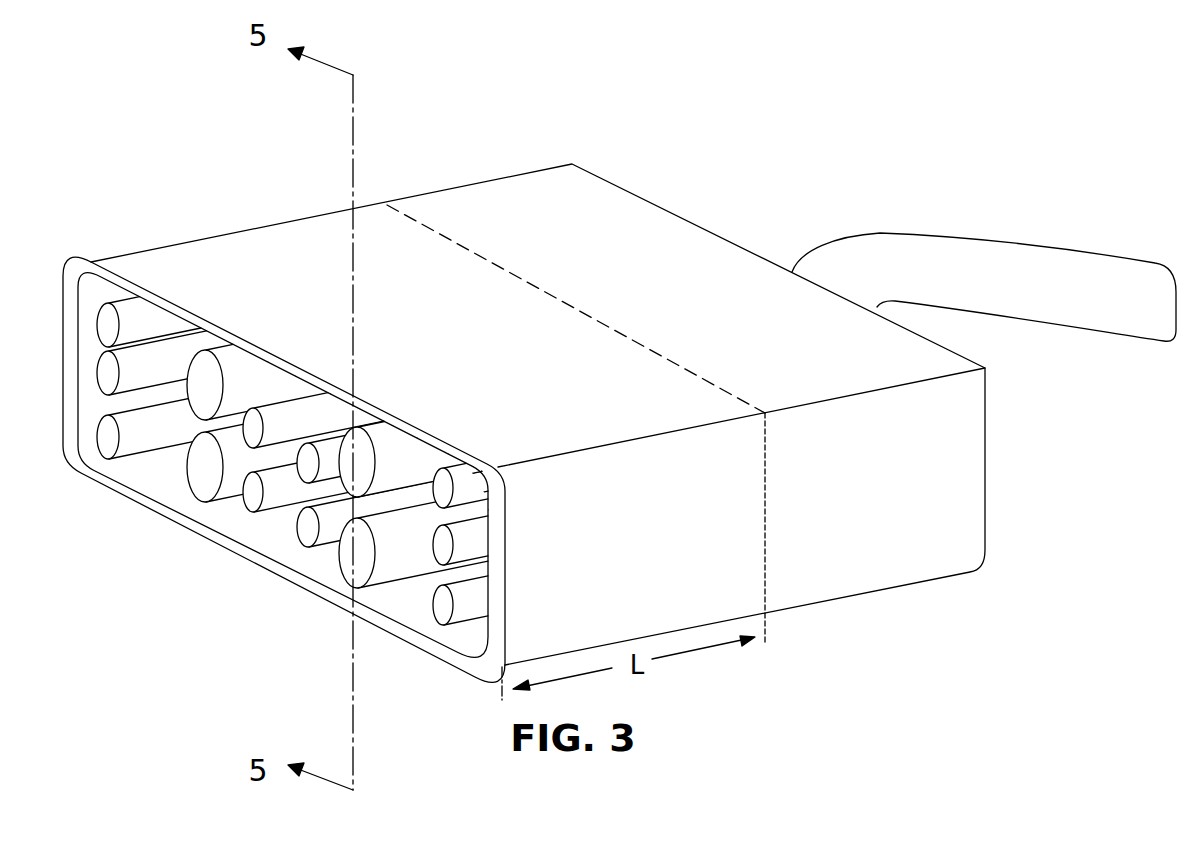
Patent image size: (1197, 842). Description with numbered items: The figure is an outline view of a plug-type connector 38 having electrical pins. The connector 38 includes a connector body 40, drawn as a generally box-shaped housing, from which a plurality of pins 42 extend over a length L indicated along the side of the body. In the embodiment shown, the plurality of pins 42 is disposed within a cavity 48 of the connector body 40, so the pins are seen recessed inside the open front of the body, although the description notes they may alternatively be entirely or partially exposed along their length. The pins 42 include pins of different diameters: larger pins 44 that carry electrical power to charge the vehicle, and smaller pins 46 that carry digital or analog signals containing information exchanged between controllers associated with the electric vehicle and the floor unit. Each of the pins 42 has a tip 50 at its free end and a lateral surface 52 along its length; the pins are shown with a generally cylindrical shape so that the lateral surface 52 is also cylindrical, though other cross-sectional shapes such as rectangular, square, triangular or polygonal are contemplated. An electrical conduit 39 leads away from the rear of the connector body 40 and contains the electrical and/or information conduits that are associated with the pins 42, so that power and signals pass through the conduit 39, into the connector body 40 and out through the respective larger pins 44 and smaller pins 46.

The connector 38 is at (524, 391).
The electrical conduit 39 is at (997, 248).
The connector body 40 is at (574, 212).
The pins 42 is at (195, 478).
The larger pins 44 is at (198, 378).
The smaller pins 46 is at (108, 333).
The cavity 48 is at (267, 538).
The tip 50 is at (352, 560).
The lateral surface 52 is at (405, 560).